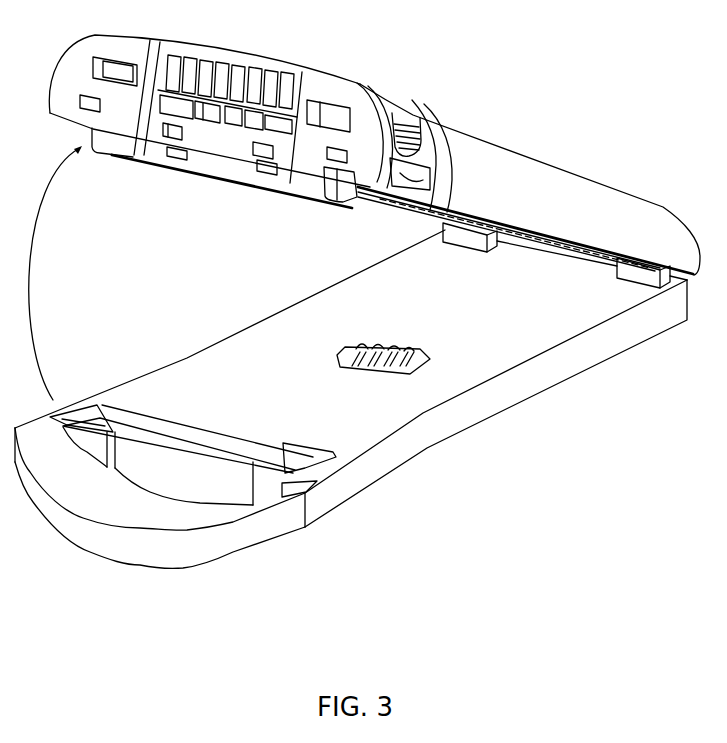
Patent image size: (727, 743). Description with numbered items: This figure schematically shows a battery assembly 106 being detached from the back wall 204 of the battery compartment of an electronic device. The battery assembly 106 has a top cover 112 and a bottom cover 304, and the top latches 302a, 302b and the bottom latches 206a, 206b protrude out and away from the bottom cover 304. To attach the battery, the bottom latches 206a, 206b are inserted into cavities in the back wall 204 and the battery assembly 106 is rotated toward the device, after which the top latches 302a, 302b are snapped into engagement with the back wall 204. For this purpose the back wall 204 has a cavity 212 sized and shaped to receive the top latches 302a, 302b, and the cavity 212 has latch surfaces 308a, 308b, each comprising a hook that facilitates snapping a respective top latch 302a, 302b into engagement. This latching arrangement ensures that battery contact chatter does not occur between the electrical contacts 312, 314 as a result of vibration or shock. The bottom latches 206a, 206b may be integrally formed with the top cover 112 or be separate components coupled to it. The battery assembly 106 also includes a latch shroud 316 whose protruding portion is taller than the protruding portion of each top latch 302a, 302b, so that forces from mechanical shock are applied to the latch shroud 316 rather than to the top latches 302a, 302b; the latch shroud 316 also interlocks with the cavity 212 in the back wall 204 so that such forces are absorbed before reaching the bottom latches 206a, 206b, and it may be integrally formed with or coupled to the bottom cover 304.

The battery assembly 106 is at (470, 78).
The top cover 112 is at (563, 157).
The back wall 204 is at (492, 482).
The bottom latch 206a is at (633, 277).
The bottom latch 206b is at (465, 241).
The cavity 212 is at (205, 433).
The top latch 302a is at (331, 210).
The top latch 302b is at (113, 168).
The bottom cover 304 is at (543, 237).
The latch surface 308a is at (316, 449).
The latch surface 308b is at (82, 408).
The electrical contact 312 is at (432, 358).
The electrical contact 314 is at (392, 202).
The latch shroud 316 is at (235, 172).